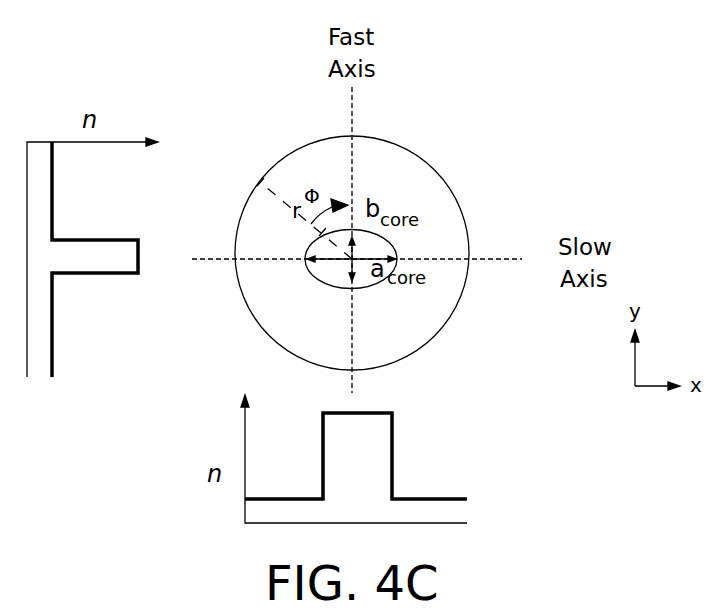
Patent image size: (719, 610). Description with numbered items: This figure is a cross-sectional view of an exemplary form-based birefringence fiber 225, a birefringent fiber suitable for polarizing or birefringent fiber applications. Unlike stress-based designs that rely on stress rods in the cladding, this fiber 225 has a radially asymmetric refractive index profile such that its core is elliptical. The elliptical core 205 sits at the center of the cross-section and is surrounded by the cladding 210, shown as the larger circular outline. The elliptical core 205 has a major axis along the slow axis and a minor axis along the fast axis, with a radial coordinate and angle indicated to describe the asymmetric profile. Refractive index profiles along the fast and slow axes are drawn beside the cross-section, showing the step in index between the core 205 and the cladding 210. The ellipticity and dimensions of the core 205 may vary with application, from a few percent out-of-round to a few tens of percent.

The birefringent fiber 225 is at (241, 100).
The cladding 210 is at (248, 238).
The core 205 is at (372, 281).